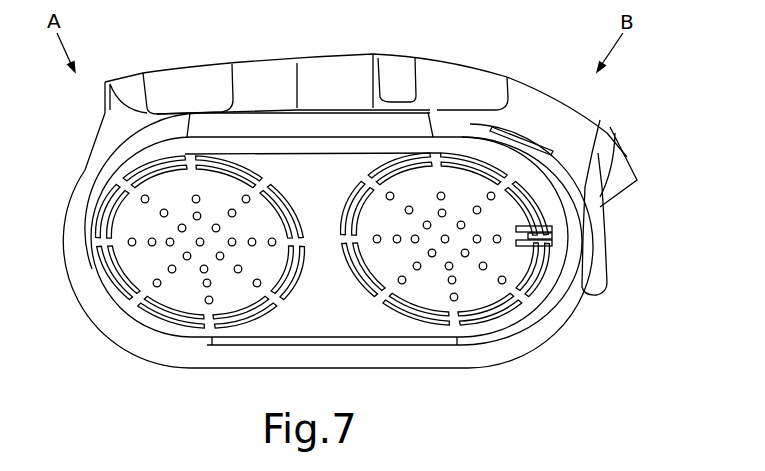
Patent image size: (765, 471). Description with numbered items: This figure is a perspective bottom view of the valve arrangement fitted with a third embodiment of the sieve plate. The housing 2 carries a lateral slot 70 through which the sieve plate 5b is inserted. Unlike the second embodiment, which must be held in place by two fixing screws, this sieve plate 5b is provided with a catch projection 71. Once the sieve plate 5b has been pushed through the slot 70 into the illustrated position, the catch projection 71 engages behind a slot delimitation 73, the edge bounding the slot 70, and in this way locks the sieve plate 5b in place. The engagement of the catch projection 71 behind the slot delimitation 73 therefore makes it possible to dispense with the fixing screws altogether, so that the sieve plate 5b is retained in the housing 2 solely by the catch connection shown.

The housing 2 is at (237, 77).
The sieve plate 5b is at (446, 183).
The slot 70 is at (503, 135).
The catch projection 71 is at (540, 238).
The slot delimitation 73 is at (563, 293).